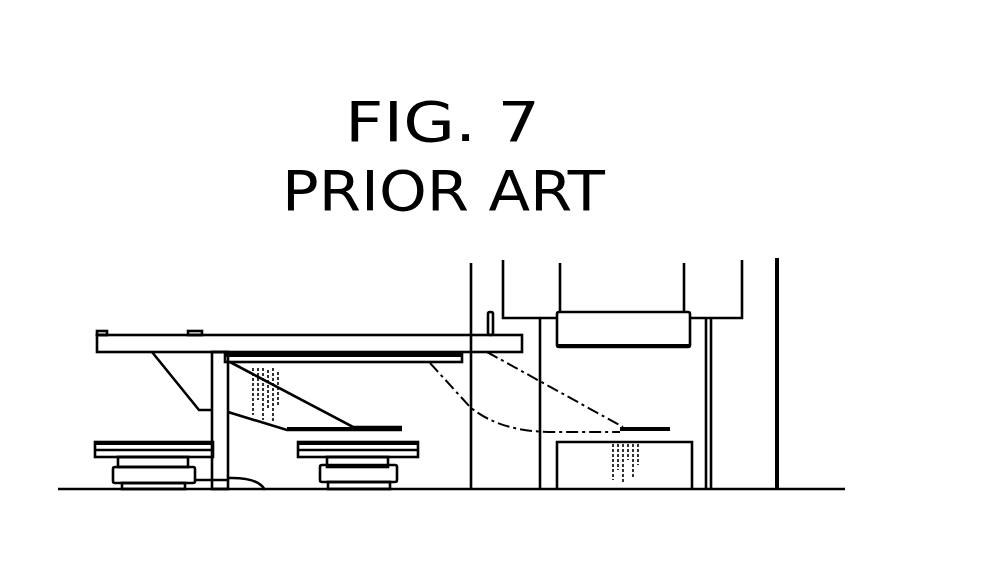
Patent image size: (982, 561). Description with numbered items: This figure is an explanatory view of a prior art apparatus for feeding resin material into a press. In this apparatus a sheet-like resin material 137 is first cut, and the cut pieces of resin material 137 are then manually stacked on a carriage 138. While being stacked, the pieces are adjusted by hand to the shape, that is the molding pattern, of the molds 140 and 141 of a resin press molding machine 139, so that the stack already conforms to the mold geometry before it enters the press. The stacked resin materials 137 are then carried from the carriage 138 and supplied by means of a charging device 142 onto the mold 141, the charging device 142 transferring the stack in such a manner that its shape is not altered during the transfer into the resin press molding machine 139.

The support platform 137 is at (108, 457).
The lifting actuator block 138 is at (320, 474).
The wall 139 is at (779, 388).
The upper block 140 is at (678, 332).
The lower block 141 is at (688, 463).
The plate 142 is at (370, 343).